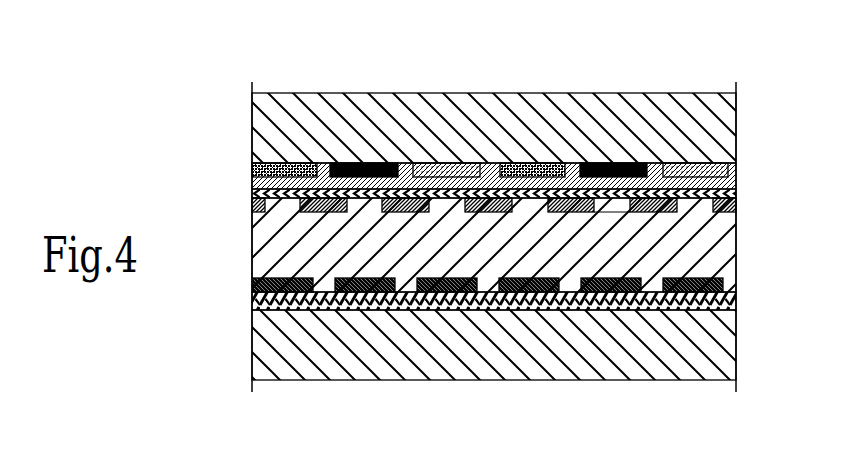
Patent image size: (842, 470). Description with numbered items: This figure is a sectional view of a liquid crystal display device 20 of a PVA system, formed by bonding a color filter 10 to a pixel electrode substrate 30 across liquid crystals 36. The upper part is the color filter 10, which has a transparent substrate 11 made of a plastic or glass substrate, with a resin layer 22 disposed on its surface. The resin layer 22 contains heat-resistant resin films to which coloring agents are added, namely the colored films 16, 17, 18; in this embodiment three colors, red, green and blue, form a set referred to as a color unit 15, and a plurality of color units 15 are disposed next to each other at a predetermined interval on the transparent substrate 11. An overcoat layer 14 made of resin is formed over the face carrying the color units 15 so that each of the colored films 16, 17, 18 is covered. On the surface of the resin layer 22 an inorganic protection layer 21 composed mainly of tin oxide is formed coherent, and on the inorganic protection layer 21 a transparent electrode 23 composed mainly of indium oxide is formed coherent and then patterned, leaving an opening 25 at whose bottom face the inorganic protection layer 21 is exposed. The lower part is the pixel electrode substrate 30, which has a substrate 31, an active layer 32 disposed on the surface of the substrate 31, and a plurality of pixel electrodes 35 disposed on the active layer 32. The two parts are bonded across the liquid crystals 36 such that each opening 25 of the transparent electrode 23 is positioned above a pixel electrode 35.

The color filter 10 is at (734, 79).
The transparent substrate 11 is at (736, 123).
The overcoat layer 14 is at (736, 183).
The color unit 15 is at (430, 58).
The colored film 16 is at (425, 163).
The colored film 17 is at (366, 163).
The colored film 18 is at (299, 163).
The liquid crystal display device 20 is at (214, 53).
The inorganic protection layer 21 is at (736, 193).
The resin layer 22 is at (245, 165).
The transparent electrode 23 is at (736, 205).
The opening 25 is at (613, 212).
The pixel electrode substrate 30 is at (731, 392).
The substrate 31 is at (736, 358).
The active layer 32 is at (737, 307).
The pixel electrode 35 is at (736, 286).
The liquid crystals 36 is at (736, 259).